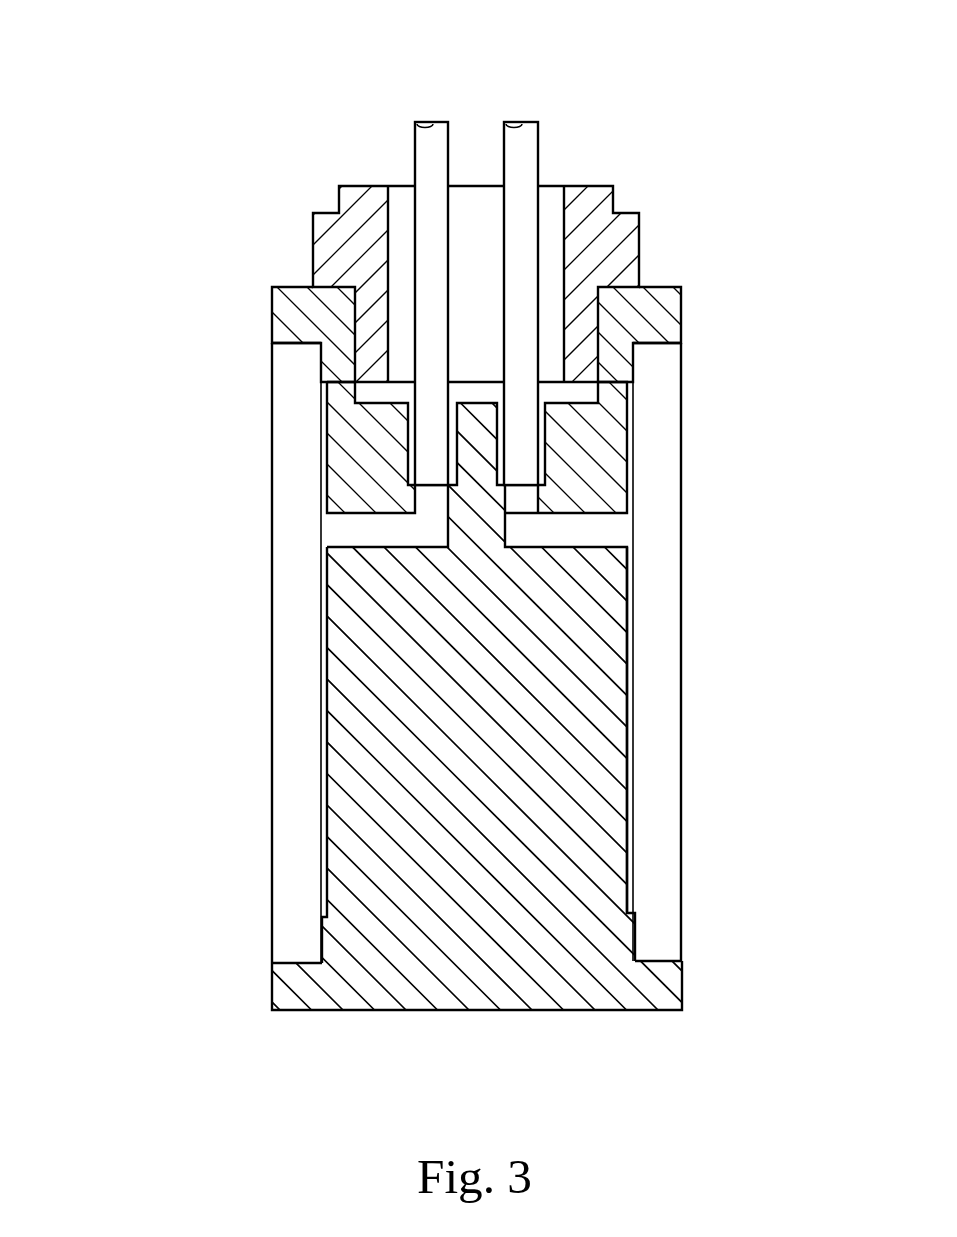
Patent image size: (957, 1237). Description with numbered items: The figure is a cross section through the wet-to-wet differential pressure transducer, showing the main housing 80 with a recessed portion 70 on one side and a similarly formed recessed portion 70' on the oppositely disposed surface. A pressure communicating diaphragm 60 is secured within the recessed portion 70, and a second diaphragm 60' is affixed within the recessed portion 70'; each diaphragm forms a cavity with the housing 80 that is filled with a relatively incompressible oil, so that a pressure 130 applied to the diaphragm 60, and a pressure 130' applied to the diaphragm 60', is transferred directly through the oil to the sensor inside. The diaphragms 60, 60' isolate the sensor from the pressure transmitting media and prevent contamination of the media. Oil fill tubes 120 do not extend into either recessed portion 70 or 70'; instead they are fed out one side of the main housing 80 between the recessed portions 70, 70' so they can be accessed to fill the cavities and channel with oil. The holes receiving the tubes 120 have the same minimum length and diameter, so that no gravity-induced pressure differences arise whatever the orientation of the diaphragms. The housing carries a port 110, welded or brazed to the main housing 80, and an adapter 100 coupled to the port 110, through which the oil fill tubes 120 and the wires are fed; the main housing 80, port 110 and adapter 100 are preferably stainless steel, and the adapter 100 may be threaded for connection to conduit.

The diaphragm 60 is at (478, 696).
The diaphragm 60' is at (716, 730).
The recessed portion 70 is at (239, 653).
The recessed portion 70' is at (720, 652).
The main housing 80 is at (682, 985).
The adapter 100 is at (640, 235).
The port 110 is at (682, 330).
The oil fill tubes 120 is at (497, 110).
The pressure 130 is at (184, 672).
The pressure 130' is at (774, 671).